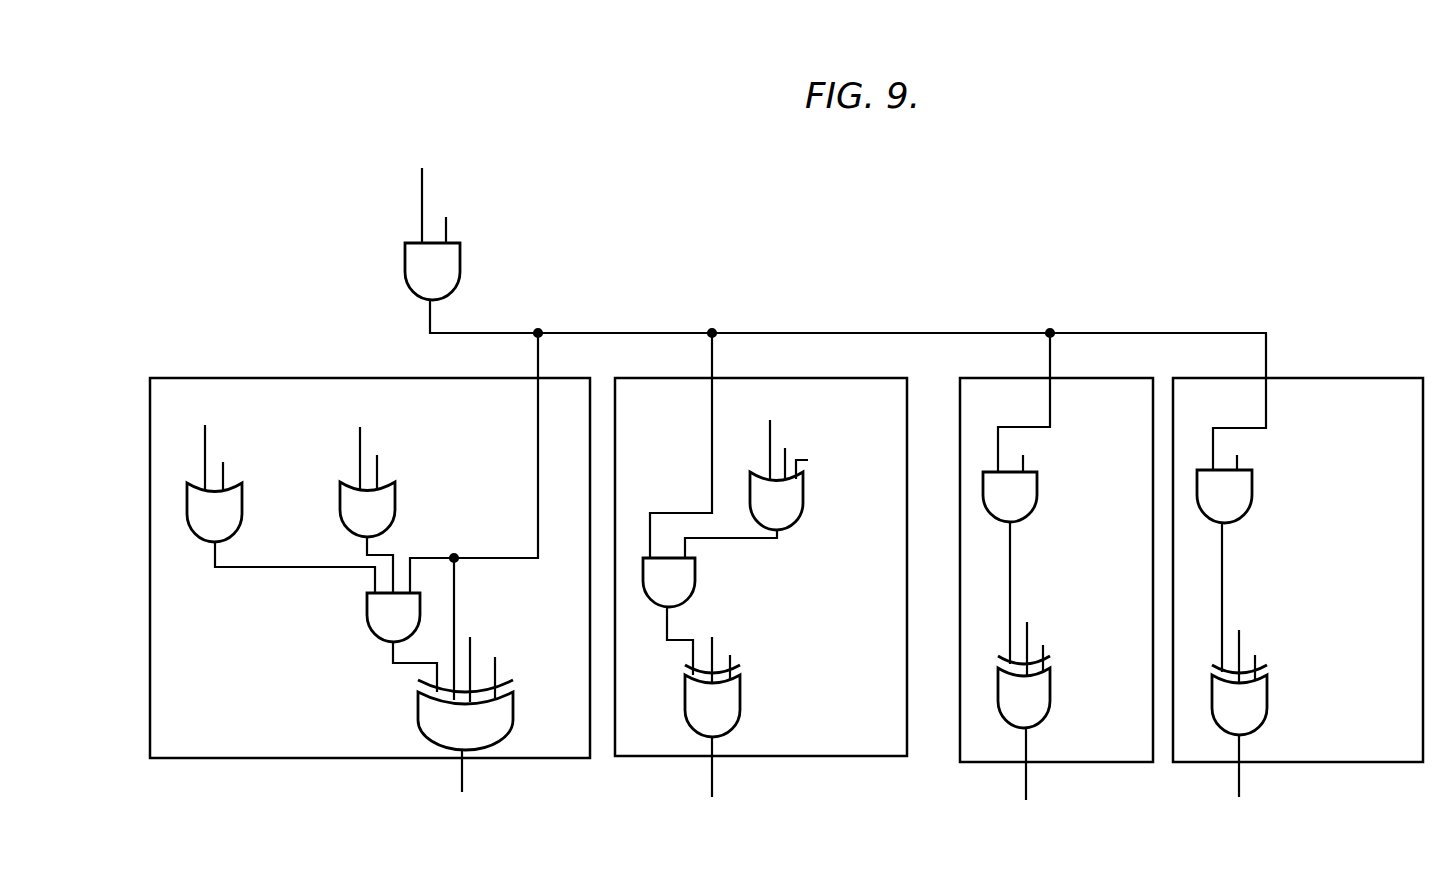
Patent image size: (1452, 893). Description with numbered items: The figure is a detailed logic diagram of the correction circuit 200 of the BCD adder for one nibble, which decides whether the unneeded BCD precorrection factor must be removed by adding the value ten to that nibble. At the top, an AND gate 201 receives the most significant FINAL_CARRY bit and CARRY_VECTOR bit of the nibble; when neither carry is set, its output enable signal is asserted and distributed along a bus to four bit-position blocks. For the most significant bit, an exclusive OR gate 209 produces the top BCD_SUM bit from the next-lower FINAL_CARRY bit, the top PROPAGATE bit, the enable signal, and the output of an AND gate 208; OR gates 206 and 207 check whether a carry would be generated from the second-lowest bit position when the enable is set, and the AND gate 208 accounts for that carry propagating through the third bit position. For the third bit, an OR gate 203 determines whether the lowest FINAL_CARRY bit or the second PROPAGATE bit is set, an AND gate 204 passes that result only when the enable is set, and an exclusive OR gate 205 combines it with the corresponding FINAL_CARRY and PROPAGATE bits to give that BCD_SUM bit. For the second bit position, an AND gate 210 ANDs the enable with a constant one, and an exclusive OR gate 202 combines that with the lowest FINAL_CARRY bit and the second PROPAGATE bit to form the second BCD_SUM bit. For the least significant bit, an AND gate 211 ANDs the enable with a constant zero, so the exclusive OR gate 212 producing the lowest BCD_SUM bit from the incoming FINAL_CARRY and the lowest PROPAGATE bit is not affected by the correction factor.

The correction circuit 200 is at (318, 223).
The AND gate 201 is at (443, 271).
The exclusive OR gate 202 is at (1030, 705).
The OR gate 203 is at (783, 508).
The AND gate 204 is at (672, 586).
The exclusive OR gate 205 is at (722, 706).
The OR gate 206 is at (375, 516).
The OR gate 207 is at (228, 516).
The AND gate 208 is at (372, 618).
The exclusive OR gate 209 is at (432, 708).
The AND gate 210 is at (1023, 497).
The AND gate 211 is at (1235, 495).
The exclusive OR gate 212 is at (1245, 716).